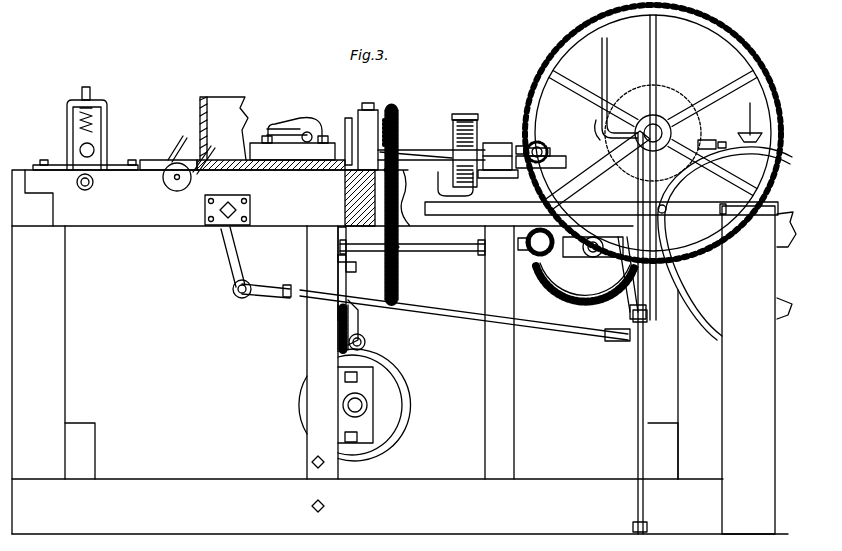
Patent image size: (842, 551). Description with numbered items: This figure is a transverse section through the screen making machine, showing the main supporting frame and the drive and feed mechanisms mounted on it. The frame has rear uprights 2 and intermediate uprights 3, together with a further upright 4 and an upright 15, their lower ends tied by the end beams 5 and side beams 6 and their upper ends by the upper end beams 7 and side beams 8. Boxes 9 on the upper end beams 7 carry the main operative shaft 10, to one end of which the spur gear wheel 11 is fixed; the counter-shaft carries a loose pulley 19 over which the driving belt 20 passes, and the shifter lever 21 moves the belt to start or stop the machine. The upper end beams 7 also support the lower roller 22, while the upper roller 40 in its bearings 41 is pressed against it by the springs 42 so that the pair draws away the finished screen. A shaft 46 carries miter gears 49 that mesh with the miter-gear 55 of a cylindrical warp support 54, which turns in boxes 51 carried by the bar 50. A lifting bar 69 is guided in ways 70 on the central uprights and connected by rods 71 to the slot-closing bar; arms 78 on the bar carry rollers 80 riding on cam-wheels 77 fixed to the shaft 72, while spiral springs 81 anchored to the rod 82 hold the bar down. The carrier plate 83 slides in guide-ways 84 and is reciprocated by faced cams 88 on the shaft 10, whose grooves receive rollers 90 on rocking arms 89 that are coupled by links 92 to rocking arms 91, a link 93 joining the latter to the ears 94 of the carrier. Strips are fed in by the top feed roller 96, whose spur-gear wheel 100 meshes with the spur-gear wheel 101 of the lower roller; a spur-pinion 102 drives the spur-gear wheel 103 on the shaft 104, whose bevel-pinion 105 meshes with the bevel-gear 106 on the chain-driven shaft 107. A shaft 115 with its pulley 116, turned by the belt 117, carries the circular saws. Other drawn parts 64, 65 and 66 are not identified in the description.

The rear uprights 2 is at (64, 347).
The intermediate uprights 3 is at (306, 356).
The standard 4 is at (514, 378).
The end beams 5 is at (206, 483).
The side beams 6 is at (94, 452).
The upper end beams 7 is at (152, 226).
The upper side beams 8 is at (17, 169).
The boxes 9 is at (704, 140).
The main operative shaft 10 is at (662, 122).
The spur gear wheel 11 is at (722, 42).
The upright 15 is at (776, 424).
The loose pulley 19 is at (694, 336).
The driving belt 20 is at (657, 64).
The shifter lever 21 is at (608, 52).
The roller 22 is at (80, 190).
The roller 40 is at (80, 150).
The bearings 41 is at (100, 143).
The springs 42 is at (93, 124).
The shaft 46 is at (545, 150).
The miter gears 49 is at (540, 142).
The bar 50 is at (503, 178).
The boxes 51 is at (492, 145).
The support 54 is at (430, 148).
The miter-gear 55 is at (518, 146).
The lever 64 is at (590, 150).
The clutch member 65 is at (474, 120).
The pin 66 is at (756, 124).
The bar 69 is at (340, 278).
The ways 70 is at (356, 270).
The rods 71 is at (341, 244).
The shaft 72 is at (343, 405).
The cam-wheels 77 is at (412, 400).
The arms 78 is at (360, 325).
The roller 80 is at (366, 344).
The spiral springs 81 is at (338, 325).
The rod 82 is at (325, 506).
The plate 83 is at (290, 150).
The guide-ways 84 is at (266, 137).
The faced cams 88 is at (630, 90).
The rocking arms 89 is at (628, 305).
The roller 90 is at (600, 128).
The rocking arm 91 is at (226, 256).
The links 92 is at (464, 317).
The link 93 is at (275, 128).
The ears 94 is at (315, 127).
The roller 96 is at (349, 117).
The spur-gear wheel 100 is at (374, 128).
The spur-gear wheel 101 is at (345, 202).
The spur-pinion 102 is at (392, 160).
The spur-gear wheel 103 is at (398, 270).
The shaft 104 is at (460, 250).
The bevel-pinion 105 is at (540, 254).
The bevel-gear 106 is at (590, 304).
The shaft 107 is at (594, 257).
The shaft 115 is at (172, 182).
The pulley 116 is at (190, 186).
The belt 117 is at (172, 149).